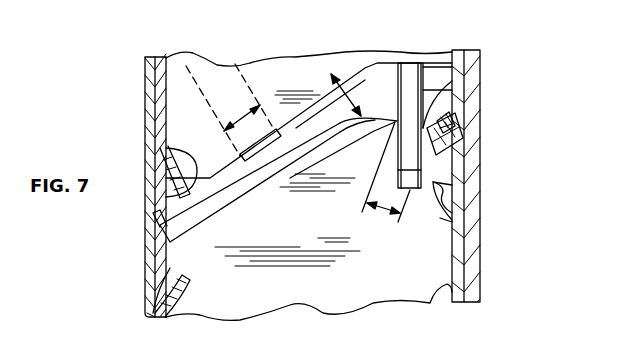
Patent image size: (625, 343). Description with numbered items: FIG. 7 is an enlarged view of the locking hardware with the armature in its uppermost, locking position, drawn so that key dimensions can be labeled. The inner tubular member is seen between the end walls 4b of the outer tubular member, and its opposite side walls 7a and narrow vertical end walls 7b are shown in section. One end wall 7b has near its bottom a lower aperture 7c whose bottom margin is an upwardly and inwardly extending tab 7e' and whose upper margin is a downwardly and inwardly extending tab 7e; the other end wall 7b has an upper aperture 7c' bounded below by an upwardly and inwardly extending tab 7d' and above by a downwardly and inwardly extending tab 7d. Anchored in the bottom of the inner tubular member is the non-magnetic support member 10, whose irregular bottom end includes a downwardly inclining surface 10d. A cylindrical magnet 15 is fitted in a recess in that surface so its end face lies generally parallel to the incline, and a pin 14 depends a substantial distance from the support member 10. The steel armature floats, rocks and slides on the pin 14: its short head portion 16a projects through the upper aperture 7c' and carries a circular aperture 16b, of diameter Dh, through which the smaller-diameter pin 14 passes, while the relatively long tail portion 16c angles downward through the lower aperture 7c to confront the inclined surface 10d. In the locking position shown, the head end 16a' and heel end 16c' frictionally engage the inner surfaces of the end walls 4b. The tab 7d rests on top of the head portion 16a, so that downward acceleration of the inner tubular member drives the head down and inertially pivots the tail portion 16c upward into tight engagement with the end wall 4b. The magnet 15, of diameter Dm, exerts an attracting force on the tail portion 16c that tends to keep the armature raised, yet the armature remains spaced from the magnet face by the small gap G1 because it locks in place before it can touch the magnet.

The end wall of outer tubular member 4b is at (145, 70).
The side wall of inner tubular member 7a is at (214, 84).
The end wall of inner tubular member 7b is at (171, 59).
The lower aperture 7c is at (121, 291).
The upper aperture 7c' is at (493, 195).
The tab 7d is at (489, 109).
The tab 7d' is at (493, 231).
The tab 7e is at (132, 162).
The tab 7e' is at (189, 309).
The support member 10 is at (228, 95).
The inclined surface 10d is at (374, 342).
The pin 14 is at (480, 77).
The magnet 15 is at (249, 72).
The head portion 16a is at (493, 137).
The head end 16a' is at (505, 124).
The circular aperture 16b is at (424, 92).
The tail portion 16c is at (210, 193).
The heel end 16c' is at (136, 191).
The magnet diameter Dm is at (222, 126).
The armature head aperture diameter Dh is at (408, 217).
The armature to magnet spacing in locking condition G1 is at (331, 74).